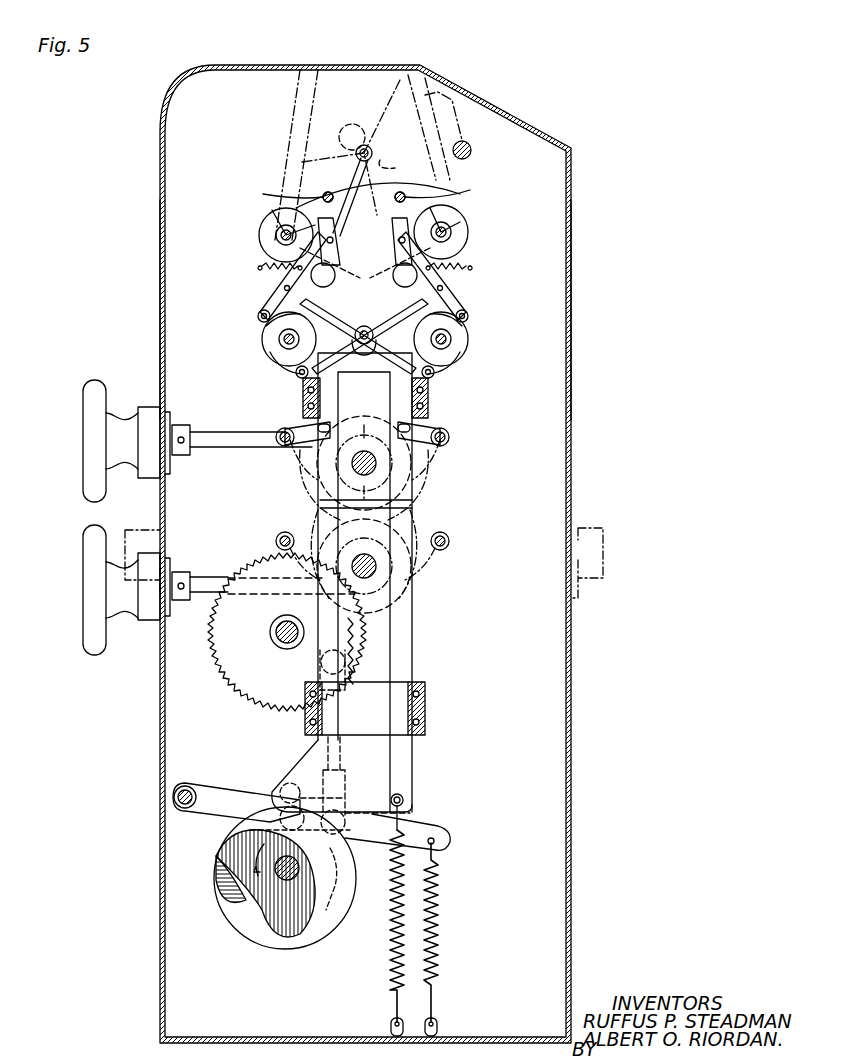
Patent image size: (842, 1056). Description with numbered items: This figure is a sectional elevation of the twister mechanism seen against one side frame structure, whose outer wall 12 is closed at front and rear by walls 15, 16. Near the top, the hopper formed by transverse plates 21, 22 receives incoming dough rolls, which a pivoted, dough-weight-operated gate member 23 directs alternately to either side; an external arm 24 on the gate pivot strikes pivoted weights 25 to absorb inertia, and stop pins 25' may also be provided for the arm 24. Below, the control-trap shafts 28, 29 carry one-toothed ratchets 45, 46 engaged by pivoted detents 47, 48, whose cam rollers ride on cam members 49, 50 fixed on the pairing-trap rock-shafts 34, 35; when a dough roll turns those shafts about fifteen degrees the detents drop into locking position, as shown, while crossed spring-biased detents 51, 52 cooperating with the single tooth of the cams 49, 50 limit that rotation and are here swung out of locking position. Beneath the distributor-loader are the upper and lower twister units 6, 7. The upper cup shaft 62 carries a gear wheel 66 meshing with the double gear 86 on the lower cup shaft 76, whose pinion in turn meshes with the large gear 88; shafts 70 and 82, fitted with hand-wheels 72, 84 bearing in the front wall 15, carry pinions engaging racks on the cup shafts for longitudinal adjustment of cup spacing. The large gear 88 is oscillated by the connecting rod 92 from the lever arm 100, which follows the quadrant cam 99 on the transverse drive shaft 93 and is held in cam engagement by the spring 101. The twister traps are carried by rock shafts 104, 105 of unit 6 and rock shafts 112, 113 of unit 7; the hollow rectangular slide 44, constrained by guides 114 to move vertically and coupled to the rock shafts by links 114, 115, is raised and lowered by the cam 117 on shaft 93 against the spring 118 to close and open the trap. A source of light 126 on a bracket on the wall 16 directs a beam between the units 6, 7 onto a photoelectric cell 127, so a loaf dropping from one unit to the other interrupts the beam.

The upper twisting unit 6 is at (472, 479).
The lower twisting unit 7 is at (470, 587).
The outer wall 12 is at (533, 130).
The front wall 15 is at (158, 318).
The rear wall 16 is at (573, 312).
The transverse plate 21 is at (300, 112).
The transverse plate 22 is at (371, 180).
The gate member 23 is at (396, 92).
The external arm 24 is at (462, 196).
The pivoted weights 25 is at (339, 252).
The stop pins 25' is at (368, 189).
The rock-shaft 28 is at (278, 236).
The rock-shaft 29 is at (452, 234).
The rock-shaft 34 is at (278, 340).
The rock-shaft 35 is at (462, 338).
The cam actuated slide 44 is at (335, 680).
The one-toothed ratchet 45 is at (270, 222).
The one-toothed ratchet 46 is at (467, 222).
The detent 47 is at (270, 294).
The detent 48 is at (470, 300).
The cam member 49 is at (275, 356).
The cam member 50 is at (462, 356).
The crossed spring biased pivoted detent 51 is at (328, 322).
The crossed spring biased pivoted detent 52 is at (397, 322).
The cup shaft 62 is at (356, 464).
The gear wheel 66 is at (410, 470).
The pinion shaft 70 is at (208, 456).
The hand-wheel 72 is at (92, 384).
The cup shaft 76 is at (392, 592).
The pinion shaft 82 is at (212, 575).
The hand-wheel 84 is at (88, 614).
The gear wheel 86 is at (384, 520).
The large gear 88 is at (224, 670).
The connecting rod 92 is at (342, 760).
The transverse drive shaft 93 is at (292, 935).
The cam 99 is at (258, 932).
The lever arm 100 is at (246, 795).
The spring 101 is at (440, 905).
The rock shaft 104 is at (290, 428).
The rock shaft 105 is at (450, 437).
The rock shaft 112 is at (450, 540).
The rock shaft 113 is at (280, 534).
The guide 114 is at (300, 392).
The link 115 is at (420, 420).
The cam 117 is at (340, 890).
The spring 118 is at (392, 955).
The source of light 126 is at (605, 551).
The photoelectric cell 127 is at (125, 530).